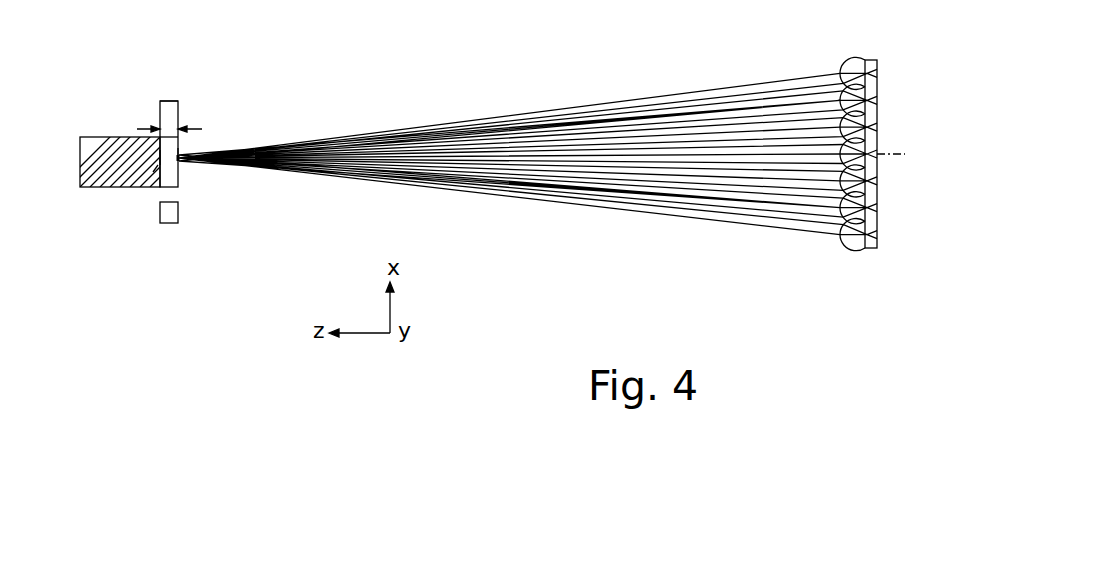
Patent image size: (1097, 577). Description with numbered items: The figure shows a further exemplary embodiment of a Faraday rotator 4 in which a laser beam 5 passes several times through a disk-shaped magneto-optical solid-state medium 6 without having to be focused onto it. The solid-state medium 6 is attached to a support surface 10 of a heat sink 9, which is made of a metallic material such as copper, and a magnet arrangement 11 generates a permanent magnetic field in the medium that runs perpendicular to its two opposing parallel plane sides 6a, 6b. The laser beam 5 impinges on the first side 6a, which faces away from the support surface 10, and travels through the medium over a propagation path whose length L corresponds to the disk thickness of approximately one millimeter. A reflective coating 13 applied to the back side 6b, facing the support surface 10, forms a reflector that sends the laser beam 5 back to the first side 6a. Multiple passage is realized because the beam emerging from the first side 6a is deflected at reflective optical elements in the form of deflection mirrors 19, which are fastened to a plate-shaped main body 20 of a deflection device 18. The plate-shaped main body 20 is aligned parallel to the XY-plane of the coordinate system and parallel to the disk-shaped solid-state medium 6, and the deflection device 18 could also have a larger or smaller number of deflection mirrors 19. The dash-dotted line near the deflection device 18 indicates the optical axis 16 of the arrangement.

The Faraday rotator 4 is at (382, 105).
The laser beam 5 is at (640, 100).
The magneto-optical solid-state medium 6 is at (172, 182).
The first side 6a is at (180, 152).
The back side 6b is at (167, 163).
The heat sink 9 is at (102, 168).
The support surface 10 is at (160, 157).
The magnet arrangement 11 is at (170, 112).
The reflective coating 13 is at (153, 172).
The optical axis 16 is at (892, 158).
The deflection device 18 is at (838, 165).
The deflection mirrors 19 is at (840, 60).
The plate-shaped main body 20 is at (868, 248).
The length of the propagation path L is at (168, 128).